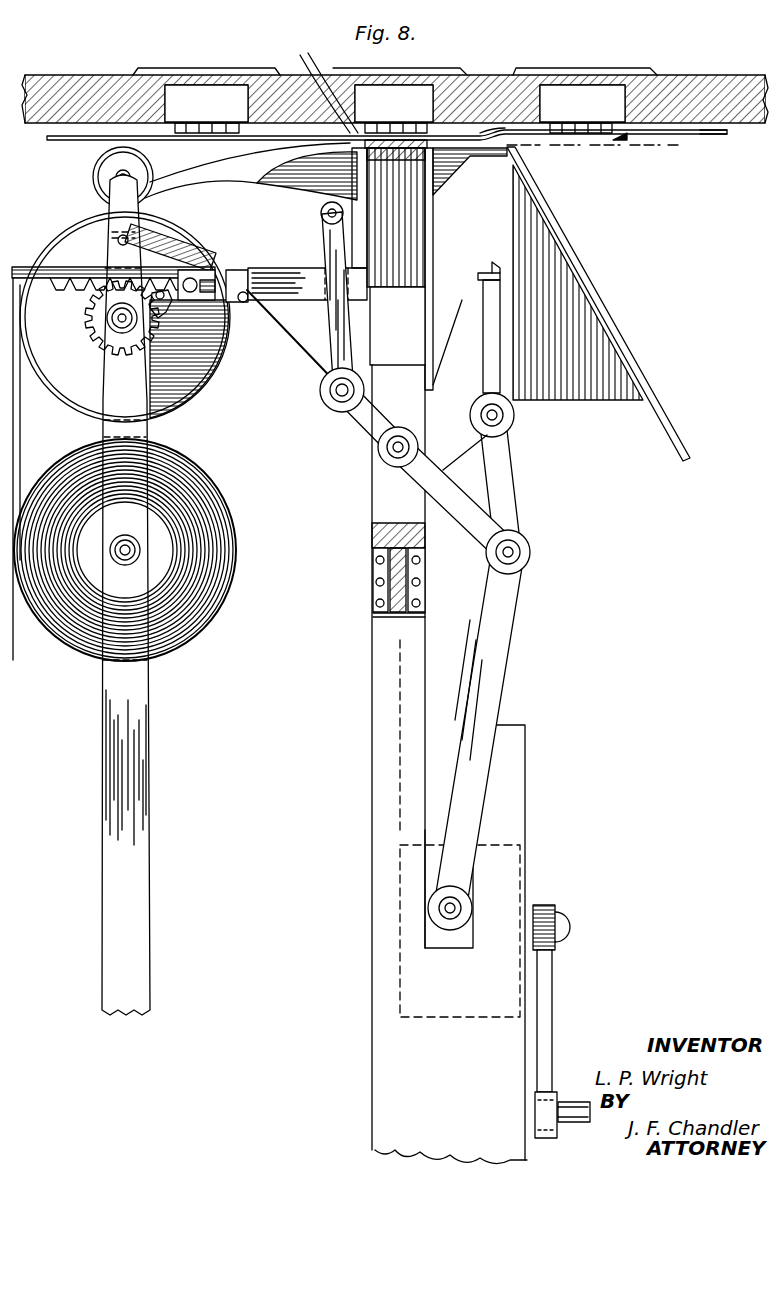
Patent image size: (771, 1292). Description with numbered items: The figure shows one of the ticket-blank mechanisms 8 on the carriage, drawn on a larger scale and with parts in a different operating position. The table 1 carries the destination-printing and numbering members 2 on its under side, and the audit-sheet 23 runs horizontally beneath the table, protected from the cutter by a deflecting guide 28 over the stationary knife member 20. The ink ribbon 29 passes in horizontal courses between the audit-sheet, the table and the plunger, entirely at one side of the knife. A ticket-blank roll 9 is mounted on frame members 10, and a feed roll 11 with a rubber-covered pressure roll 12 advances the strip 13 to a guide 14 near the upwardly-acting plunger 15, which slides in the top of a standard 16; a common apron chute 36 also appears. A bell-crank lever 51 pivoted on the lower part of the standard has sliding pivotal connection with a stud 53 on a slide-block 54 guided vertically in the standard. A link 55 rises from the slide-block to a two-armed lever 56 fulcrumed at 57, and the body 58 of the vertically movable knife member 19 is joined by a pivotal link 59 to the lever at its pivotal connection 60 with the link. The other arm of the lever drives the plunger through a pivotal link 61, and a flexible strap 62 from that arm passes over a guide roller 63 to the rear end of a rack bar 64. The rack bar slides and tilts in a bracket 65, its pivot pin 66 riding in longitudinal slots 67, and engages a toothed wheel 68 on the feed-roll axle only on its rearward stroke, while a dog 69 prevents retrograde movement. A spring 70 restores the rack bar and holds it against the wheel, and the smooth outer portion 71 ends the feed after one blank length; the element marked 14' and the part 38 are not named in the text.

The table 1 is at (55, 74).
The destination-printing and numbering member 2 is at (180, 100).
The cover plate 38 is at (238, 73).
The ink ribbon 29 is at (325, 82).
The deflecting guide 28 is at (483, 133).
The stationary knife member 20 is at (505, 146).
The audit-sheet 23 is at (703, 136).
The rubber-covered pressure roll 12 is at (95, 171).
The ticket-blank strip 13 is at (218, 165).
The guide 14 is at (307, 178).
The cam clamp 14' is at (470, 175).
The frame member 10 is at (148, 782).
The feed roll 11 is at (228, 352).
The toothed wheel 68 is at (100, 330).
The dog 69 is at (165, 306).
The ticket-blank roll 9 is at (160, 567).
The outer portion of rack bar 71 is at (40, 278).
The rack bar 64 is at (55, 268).
The spring 70 is at (165, 250).
The pivot pin 66 is at (197, 292).
The longitudinal slot 67 is at (232, 272).
The guide roller 63 is at (246, 302).
The bracket 65 is at (300, 292).
The pivotal link 61 is at (323, 238).
The flexible strap 62 is at (310, 355).
The plunger 15 is at (410, 277).
The standard 16 is at (387, 876).
The apron chute 36 is at (600, 305).
The vertically movable knife member 19 is at (490, 270).
The body of knife member 58 is at (492, 380).
The pivotal link 59 is at (515, 485).
The two-armed lever 56 is at (462, 520).
The fulcrum 57 is at (388, 448).
The link 55 is at (505, 642).
The pivotal connection 60 is at (515, 545).
The slide-block 54 is at (432, 877).
The stud 53 is at (556, 927).
The bell-crank lever 51 is at (547, 1022).
The ticket-blank mechanism 8 is at (321, 515).